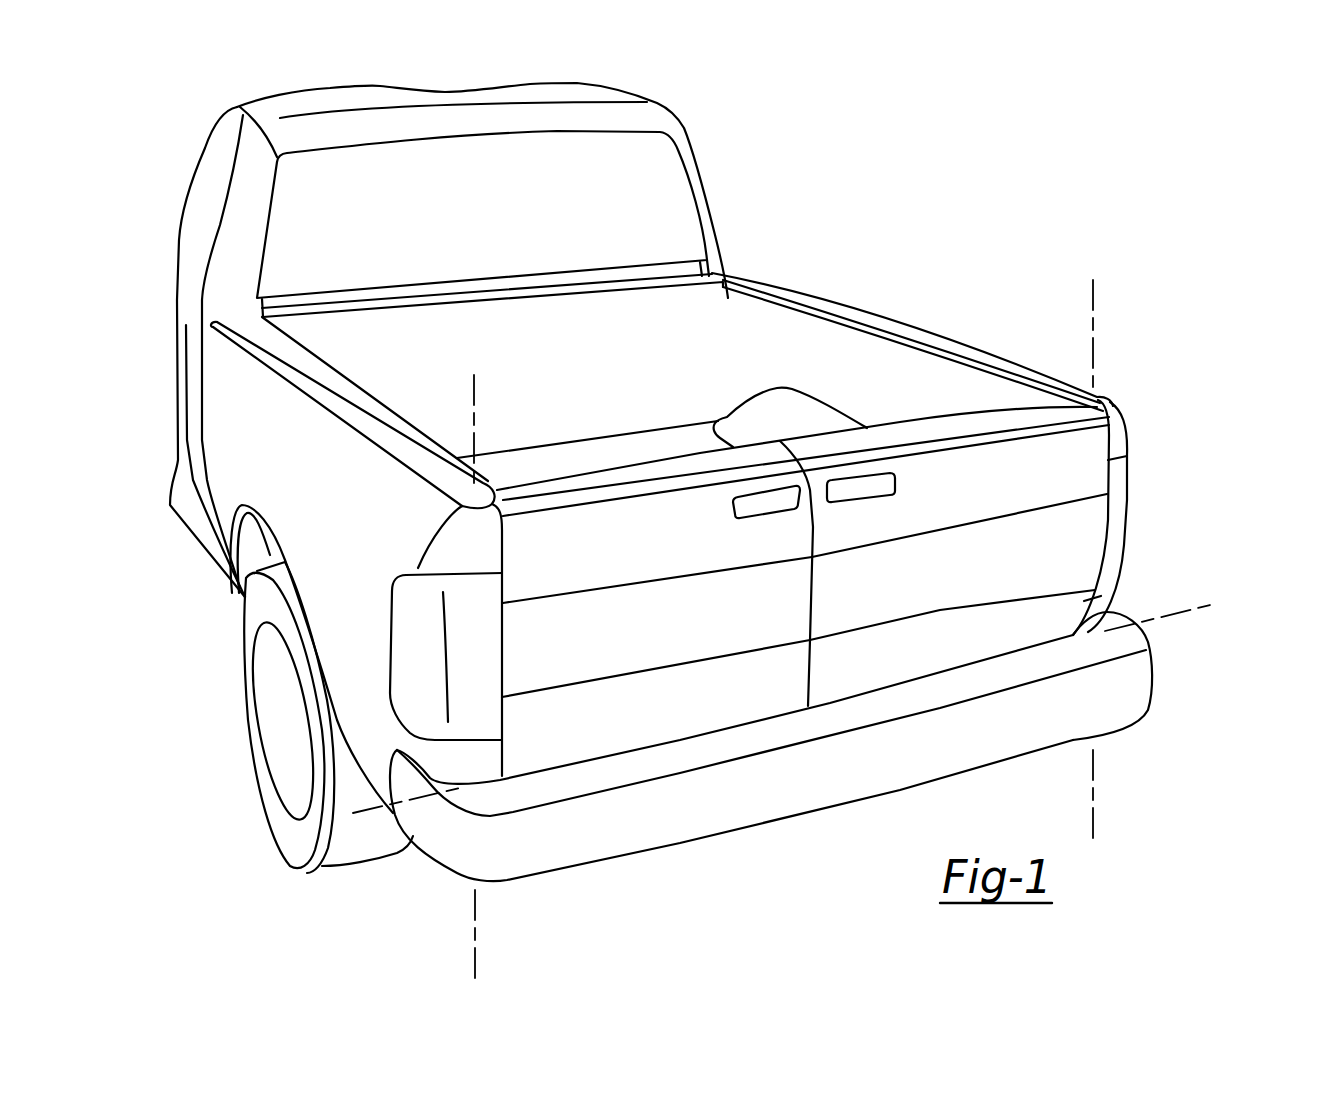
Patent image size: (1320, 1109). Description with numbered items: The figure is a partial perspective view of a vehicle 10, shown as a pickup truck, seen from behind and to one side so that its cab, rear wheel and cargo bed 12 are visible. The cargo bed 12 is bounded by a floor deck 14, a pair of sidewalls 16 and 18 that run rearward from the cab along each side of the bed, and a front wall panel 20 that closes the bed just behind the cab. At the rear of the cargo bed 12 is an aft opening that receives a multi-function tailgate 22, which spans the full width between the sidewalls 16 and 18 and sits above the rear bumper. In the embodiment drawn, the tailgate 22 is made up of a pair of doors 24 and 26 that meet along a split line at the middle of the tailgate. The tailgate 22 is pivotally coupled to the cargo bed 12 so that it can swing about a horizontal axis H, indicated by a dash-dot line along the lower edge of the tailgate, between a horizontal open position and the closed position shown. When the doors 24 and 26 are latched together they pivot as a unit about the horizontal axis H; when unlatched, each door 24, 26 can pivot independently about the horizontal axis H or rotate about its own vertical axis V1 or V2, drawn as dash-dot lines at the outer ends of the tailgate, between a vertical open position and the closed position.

The vehicle 10 is at (704, 123).
The cargo bed 12 is at (783, 268).
The floor deck 14 is at (693, 430).
The sidewall 16 is at (903, 330).
The sidewall 18 is at (330, 384).
The front wall panel 20 is at (571, 392).
The multi-function tailgate 22 is at (1066, 477).
The door 24 is at (1027, 535).
The door 26 is at (583, 707).
The vertical axis V1 is at (1093, 544).
The vertical axis V2 is at (475, 664).
The horizontal axis H is at (795, 704).